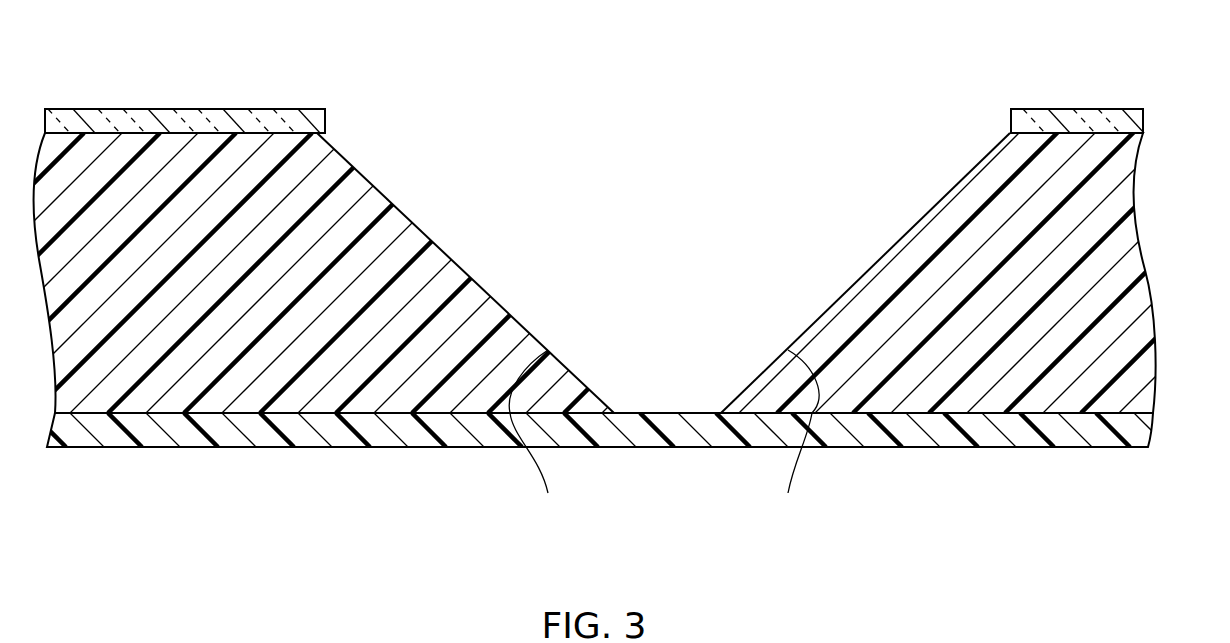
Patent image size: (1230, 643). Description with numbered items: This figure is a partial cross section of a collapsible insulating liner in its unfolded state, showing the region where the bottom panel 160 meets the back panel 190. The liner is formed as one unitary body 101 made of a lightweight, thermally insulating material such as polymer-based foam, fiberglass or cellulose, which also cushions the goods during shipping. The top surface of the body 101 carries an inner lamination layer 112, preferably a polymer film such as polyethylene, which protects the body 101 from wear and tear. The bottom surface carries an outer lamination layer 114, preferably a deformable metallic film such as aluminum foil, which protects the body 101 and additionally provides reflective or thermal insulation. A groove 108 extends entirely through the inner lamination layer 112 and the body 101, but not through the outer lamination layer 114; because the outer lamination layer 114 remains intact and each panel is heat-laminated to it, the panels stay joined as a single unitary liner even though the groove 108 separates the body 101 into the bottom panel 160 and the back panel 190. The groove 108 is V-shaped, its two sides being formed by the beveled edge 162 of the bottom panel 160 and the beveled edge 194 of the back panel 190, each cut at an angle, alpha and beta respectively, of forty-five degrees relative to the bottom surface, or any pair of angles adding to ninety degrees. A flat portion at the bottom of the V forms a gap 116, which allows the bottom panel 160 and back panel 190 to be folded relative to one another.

The body 101 is at (1108, 277).
The groove 108 is at (578, 104).
The inner lamination layer 112 is at (200, 112).
The outer lamination layer 114 is at (930, 447).
The gap 116 is at (643, 413).
The bottom panel 160 is at (93, 152).
The beveled edge 162 is at (432, 238).
The back panel 190 is at (1073, 148).
The beveled edge 194 is at (916, 226).